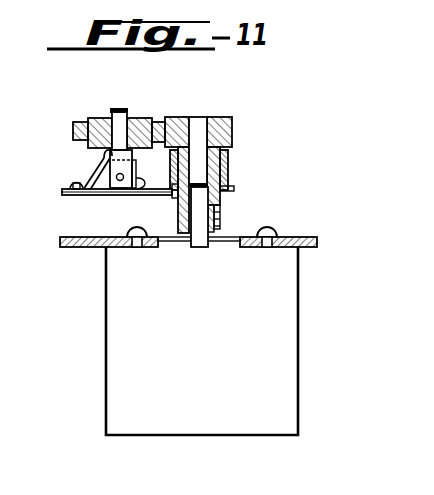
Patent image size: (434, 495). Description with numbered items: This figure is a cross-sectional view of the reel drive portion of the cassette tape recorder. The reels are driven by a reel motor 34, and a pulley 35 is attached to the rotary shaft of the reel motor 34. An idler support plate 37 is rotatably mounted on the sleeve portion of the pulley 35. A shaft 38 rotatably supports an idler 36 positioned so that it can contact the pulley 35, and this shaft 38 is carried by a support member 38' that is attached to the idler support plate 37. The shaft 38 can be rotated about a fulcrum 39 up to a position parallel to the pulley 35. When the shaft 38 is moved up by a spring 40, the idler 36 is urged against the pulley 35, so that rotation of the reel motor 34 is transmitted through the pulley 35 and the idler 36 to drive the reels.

The reel motor 34 is at (278, 333).
The pulley 35 is at (232, 118).
The idler 36 is at (74, 124).
The idler support plate 37 is at (228, 170).
The shaft 38 is at (140, 132).
The support member 38' is at (105, 210).
The fulcrum 39 is at (166, 192).
The spring 40 is at (97, 167).